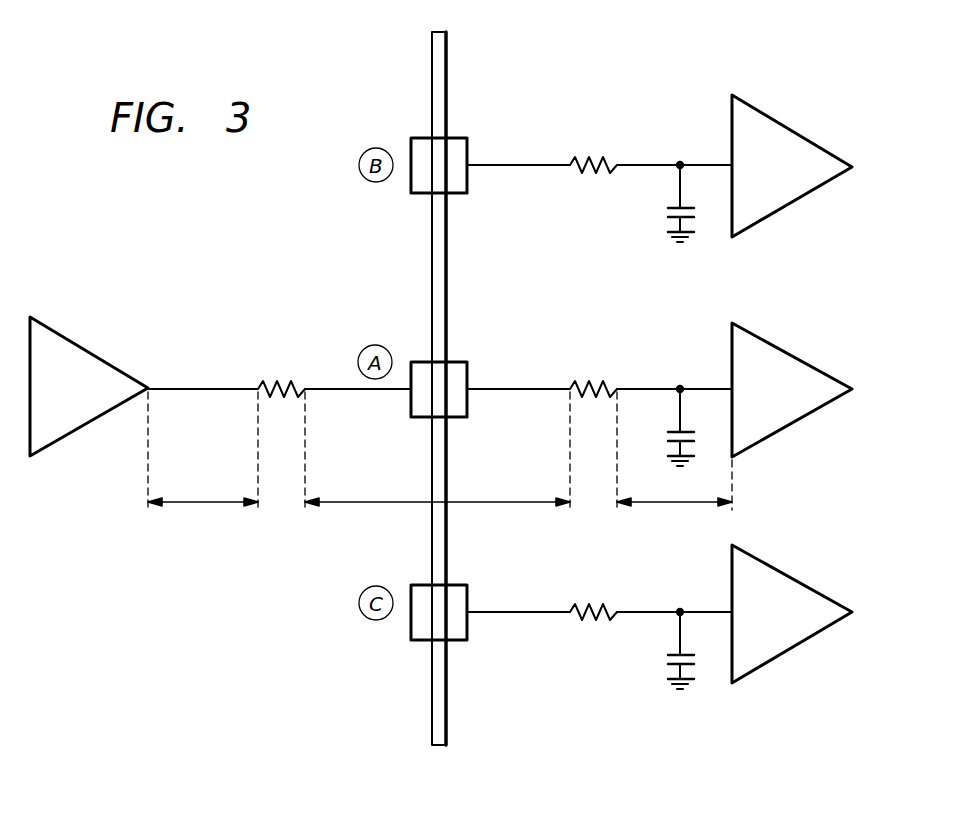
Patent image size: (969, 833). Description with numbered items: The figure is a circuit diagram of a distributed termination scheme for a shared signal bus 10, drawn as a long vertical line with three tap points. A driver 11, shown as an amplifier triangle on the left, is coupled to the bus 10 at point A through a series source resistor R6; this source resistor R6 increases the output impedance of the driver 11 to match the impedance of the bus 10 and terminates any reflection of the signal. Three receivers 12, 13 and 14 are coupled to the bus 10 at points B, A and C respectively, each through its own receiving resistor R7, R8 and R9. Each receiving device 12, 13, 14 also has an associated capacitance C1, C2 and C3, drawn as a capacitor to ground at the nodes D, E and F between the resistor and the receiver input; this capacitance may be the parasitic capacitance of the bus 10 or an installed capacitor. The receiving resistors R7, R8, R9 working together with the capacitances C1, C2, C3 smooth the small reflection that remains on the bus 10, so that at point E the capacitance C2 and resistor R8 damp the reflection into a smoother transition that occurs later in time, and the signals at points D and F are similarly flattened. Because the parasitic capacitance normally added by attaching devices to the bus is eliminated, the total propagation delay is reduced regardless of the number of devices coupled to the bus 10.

The bus 10 is at (448, 78).
The driver 11 is at (78, 346).
The receiver 12 is at (778, 121).
The receiver 13 is at (778, 345).
The receiver 14 is at (778, 566).
The source resistor R6 is at (290, 383).
The receiving resistor R7 is at (603, 158).
The receiving resistor R8 is at (603, 382).
The receiving resistor R9 is at (603, 605).
The capacitance C1 is at (673, 206).
The capacitance C2 is at (673, 430).
The capacitance C3 is at (673, 653).